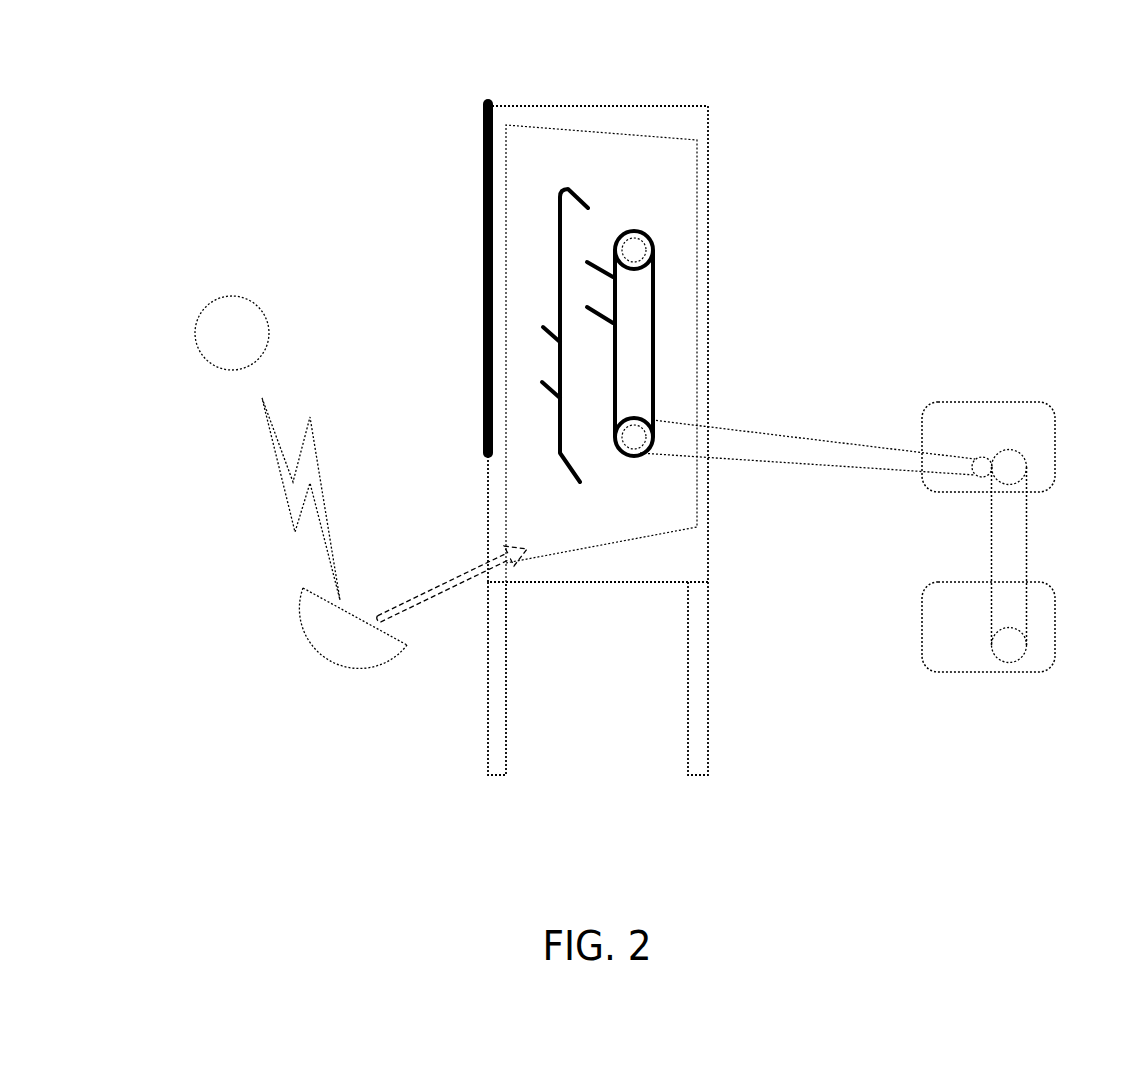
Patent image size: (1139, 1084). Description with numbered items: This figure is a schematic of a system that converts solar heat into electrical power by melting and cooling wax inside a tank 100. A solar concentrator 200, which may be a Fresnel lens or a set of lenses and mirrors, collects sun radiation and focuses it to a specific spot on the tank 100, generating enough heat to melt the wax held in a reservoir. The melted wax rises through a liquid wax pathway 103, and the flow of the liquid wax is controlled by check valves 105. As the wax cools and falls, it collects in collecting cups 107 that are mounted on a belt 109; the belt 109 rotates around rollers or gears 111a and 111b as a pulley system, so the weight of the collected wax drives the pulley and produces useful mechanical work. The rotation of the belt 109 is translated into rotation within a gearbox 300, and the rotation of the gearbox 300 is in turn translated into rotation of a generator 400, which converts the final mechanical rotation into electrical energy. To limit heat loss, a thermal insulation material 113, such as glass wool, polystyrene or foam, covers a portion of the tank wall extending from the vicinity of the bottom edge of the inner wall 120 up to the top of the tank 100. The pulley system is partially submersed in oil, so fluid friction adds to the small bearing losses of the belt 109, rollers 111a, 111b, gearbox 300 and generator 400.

The tank 100 is at (598, 440).
The liquid wax pathway 103 is at (542, 415).
The check valves 105 is at (550, 332).
The collecting cups 107 is at (595, 262).
The belt 109 is at (655, 340).
The roller 111a is at (655, 250).
The roller 111b is at (657, 435).
The thermal insulation material 113 is at (470, 195).
The inner wall 120 is at (552, 227).
The solar concentrator 200 is at (296, 603).
The gearbox 300 is at (1018, 402).
The generator 400 is at (1037, 582).